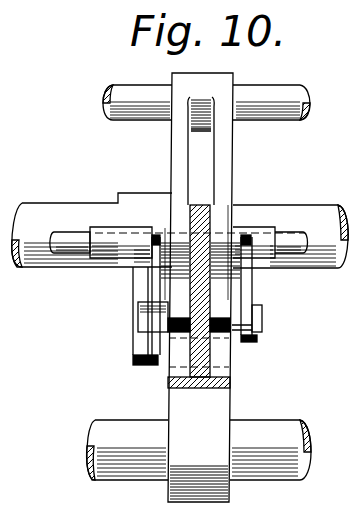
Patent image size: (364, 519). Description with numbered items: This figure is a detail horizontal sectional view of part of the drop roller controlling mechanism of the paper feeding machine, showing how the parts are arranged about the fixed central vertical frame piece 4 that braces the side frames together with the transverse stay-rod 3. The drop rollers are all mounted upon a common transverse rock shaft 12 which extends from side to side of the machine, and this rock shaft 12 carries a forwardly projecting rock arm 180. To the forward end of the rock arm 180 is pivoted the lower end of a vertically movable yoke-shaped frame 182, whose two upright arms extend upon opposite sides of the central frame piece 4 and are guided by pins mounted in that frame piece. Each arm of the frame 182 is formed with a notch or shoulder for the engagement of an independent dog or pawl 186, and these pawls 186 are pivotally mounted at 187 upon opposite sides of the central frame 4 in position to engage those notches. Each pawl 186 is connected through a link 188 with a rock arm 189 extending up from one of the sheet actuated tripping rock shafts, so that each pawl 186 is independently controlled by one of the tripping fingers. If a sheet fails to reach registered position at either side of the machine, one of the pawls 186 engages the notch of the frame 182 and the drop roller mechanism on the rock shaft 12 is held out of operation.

The transverse stay-rod 3 is at (272, 432).
The central vertical frame piece 4 is at (228, 157).
The rock shaft 12 is at (37, 259).
The rock arm 180 is at (131, 340).
The yoke-shaped frame 182 is at (152, 367).
The dog or pawl 186 is at (133, 363).
The pivot 187 is at (262, 308).
The link 188 is at (152, 289).
The rock arm 189 is at (152, 240).